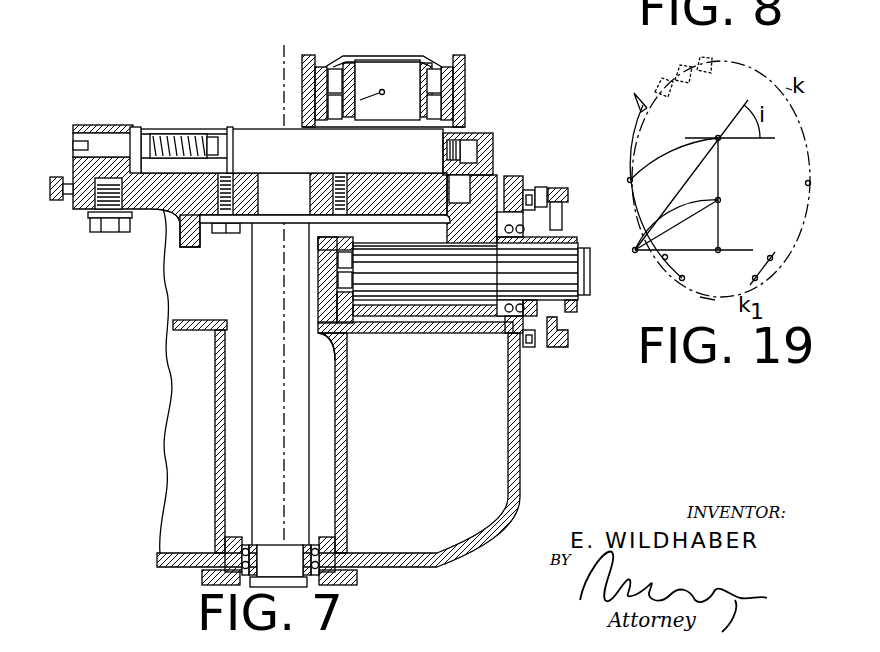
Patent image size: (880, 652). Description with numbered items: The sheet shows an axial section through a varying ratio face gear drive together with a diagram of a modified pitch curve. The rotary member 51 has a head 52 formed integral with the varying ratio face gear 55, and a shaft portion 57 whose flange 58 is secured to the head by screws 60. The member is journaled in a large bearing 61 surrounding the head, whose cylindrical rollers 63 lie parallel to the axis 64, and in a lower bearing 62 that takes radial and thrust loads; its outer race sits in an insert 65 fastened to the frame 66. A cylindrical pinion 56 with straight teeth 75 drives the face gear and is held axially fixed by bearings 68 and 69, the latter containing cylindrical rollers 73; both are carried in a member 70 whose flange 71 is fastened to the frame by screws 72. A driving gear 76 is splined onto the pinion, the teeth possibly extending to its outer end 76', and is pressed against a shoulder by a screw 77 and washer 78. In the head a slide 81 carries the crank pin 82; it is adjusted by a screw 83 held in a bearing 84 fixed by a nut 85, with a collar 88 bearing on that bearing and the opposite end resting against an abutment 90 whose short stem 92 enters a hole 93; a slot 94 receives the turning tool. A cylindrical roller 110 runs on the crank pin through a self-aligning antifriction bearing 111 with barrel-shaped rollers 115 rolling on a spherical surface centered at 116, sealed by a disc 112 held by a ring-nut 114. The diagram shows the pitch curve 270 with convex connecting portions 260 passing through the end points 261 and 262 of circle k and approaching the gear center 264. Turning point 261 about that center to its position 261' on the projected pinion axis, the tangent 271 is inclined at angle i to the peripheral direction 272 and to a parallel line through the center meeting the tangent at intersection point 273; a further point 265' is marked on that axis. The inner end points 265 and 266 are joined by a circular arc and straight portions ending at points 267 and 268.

In FIG. 7, the rotary member 51 is at (257, 330).
In FIG. 7, the head 52 is at (143, 210).
In FIG. 7, the varying ratio face gear 55 is at (197, 238).
In FIG. 7, the cylindrical pinion 56 is at (447, 283).
In FIG. 7, the shaft portion 57 is at (262, 298).
In FIG. 7, the flange 58 is at (307, 212).
In FIG. 7, the screws 60 is at (226, 233).
In FIG. 7, the bearing 61 is at (497, 185).
In FIG. 7, the bearing 62 is at (228, 555).
In FIG. 7, the cylindrical rollers 63 is at (520, 193).
In FIG. 7, the axis 64 is at (282, 397).
In FIG. 7, the insert 65 is at (350, 553).
In FIG. 7, the frame 66 is at (342, 440).
In FIG. 7, the bearing 68 is at (507, 327).
In FIG. 7, the bearing 69 is at (350, 343).
In FIG. 7, the member 70 is at (413, 335).
In FIG. 7, the flange 71 is at (533, 345).
In FIG. 7, the screws 72 is at (547, 343).
In FIG. 7, the cylindrical rollers 73 is at (368, 318).
In FIG. 7, the straight teeth 75 is at (413, 262).
In FIG. 7, the driving gear 76 is at (566, 169).
In FIG. 7, the outer end 76' is at (573, 223).
In FIG. 7, the screw 77 is at (580, 293).
In FIG. 7, the washer 78 is at (573, 297).
In FIG. 7, the slide 81 is at (243, 137).
In FIG. 7, the crank pin 82 is at (400, 80).
In FIG. 7, the screw 83 is at (163, 137).
In FIG. 7, the bearing 84 is at (104, 121).
In FIG. 7, the nut 85 is at (92, 212).
In FIG. 7, the collar 88 is at (134, 131).
In FIG. 7, the abutment 90 is at (493, 137).
In FIG. 7, the short stem 92 is at (447, 165).
In FIG. 7, the hole 93 is at (455, 212).
In FIG. 7, the slot 94 is at (82, 149).
In FIG. 7, the cylindrical roller 110 is at (465, 97).
In FIG. 7, the antifriction bearing 111 is at (432, 67).
In FIG. 7, the disc 112 is at (356, 63).
In FIG. 7, the ring-nut 114 is at (333, 52).
In FIG. 7, the barrel-shaped rollers 115 is at (303, 77).
In FIG. 7, the center 116 is at (303, 105).
In FIG. 19, the connecting portions 260 is at (655, 243).
In FIG. 19, the end point 261 is at (612, 179).
In FIG. 19, the position 261' is at (704, 127).
In FIG. 19, the end point 262 is at (808, 183).
In FIG. 19, the gear center 264 is at (696, 195).
In FIG. 19, the inner end point 265 is at (663, 275).
In FIG. 19, the point 265' is at (740, 195).
In FIG. 19, the inner end point 266 is at (772, 258).
In FIG. 19, the point 267 is at (735, 297).
In FIG. 19, the point 268 is at (757, 280).
In FIG. 19, the pitch curve 270 is at (658, 84).
In FIG. 19, the tangent 271 is at (745, 103).
In FIG. 19, the peripheral direction 272 is at (749, 142).
In FIG. 19, the intersection point 273 is at (636, 263).